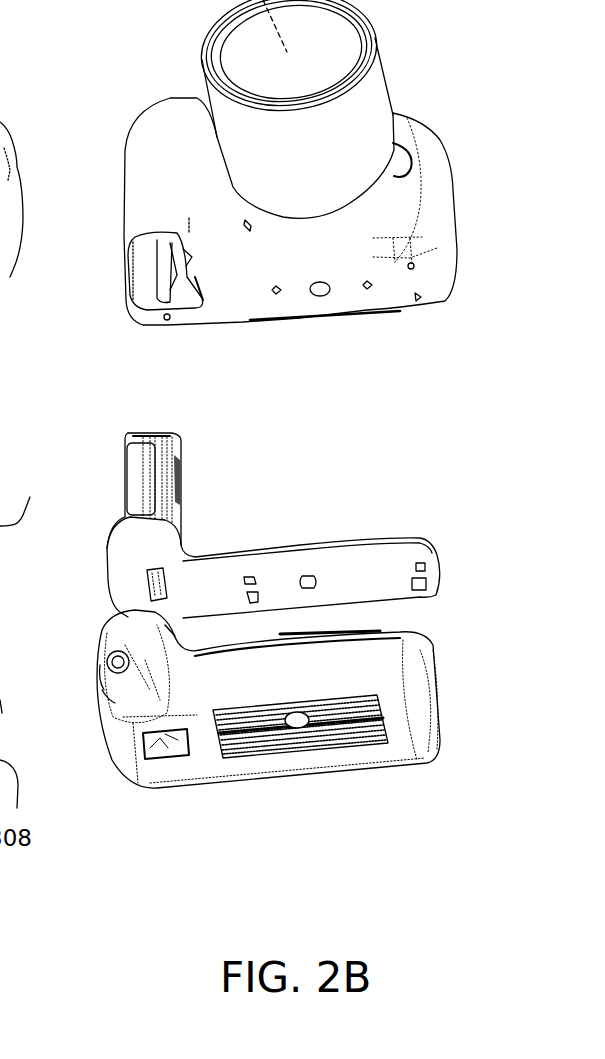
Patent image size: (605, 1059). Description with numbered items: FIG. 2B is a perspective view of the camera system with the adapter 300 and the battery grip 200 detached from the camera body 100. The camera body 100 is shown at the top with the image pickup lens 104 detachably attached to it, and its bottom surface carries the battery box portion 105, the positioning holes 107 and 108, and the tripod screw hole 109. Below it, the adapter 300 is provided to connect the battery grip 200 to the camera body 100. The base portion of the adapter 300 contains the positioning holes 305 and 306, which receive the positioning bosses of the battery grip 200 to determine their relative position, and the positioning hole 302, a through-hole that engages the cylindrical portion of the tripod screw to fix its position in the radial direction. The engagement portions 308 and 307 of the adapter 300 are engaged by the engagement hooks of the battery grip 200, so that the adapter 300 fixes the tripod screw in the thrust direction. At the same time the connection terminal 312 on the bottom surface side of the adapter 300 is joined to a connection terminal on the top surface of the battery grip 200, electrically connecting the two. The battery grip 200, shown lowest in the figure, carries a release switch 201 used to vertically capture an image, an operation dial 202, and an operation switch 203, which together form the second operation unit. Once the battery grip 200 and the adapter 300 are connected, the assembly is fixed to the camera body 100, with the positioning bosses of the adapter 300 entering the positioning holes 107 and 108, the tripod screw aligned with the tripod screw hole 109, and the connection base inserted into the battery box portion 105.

The camera body 100 is at (443, 200).
The image pickup lens 104 is at (375, 99).
The battery box portion 105 is at (160, 260).
The positioning hole 107 is at (275, 296).
The positioning hole 108 is at (367, 291).
The tripod screw hole 109 is at (318, 296).
The battery grip 200 is at (443, 740).
The release switch 201 is at (102, 673).
The operation dial 202 is at (102, 707).
The operation switch 203 is at (104, 660).
The adapter 300 is at (382, 537).
The positioning hole 302 is at (308, 574).
The positioning hole 305 is at (421, 563).
The positioning hole 306 is at (252, 577).
The engagement portion 307 is at (427, 590).
The engagement portion 308 is at (252, 603).
The connection terminal 312 is at (148, 583).